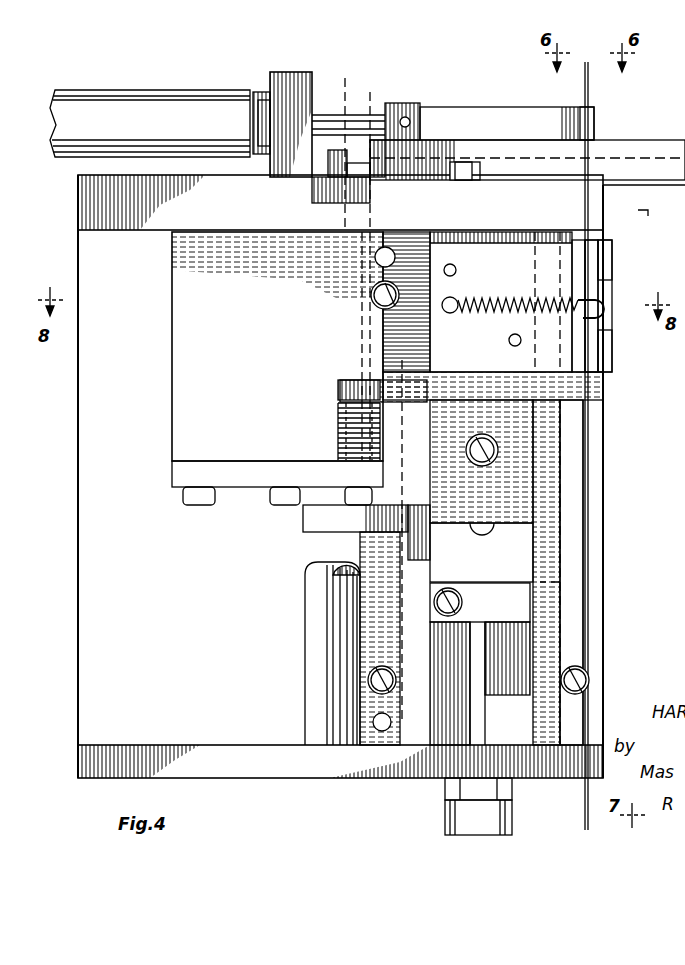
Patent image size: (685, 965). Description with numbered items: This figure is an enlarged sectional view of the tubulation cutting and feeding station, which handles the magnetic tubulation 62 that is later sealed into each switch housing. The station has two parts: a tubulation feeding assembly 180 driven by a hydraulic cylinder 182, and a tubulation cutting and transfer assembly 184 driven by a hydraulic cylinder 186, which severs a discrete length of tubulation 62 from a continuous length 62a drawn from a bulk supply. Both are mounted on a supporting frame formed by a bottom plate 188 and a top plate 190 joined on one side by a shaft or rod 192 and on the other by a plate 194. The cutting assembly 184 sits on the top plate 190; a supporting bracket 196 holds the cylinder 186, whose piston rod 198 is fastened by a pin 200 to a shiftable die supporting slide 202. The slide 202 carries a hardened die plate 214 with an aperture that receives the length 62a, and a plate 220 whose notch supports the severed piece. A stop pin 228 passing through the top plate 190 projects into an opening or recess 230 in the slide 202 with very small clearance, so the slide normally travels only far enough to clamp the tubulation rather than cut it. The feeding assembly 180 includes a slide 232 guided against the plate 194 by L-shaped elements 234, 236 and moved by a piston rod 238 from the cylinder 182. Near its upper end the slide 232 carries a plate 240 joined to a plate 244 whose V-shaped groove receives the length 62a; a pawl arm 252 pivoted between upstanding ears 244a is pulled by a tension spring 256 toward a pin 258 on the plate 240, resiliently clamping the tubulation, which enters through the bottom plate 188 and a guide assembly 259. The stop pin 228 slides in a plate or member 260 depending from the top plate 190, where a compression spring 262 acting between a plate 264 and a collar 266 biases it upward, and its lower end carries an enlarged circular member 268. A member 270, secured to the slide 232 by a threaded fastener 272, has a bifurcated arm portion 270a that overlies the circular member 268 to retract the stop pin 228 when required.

The tubulation 62 is at (589, 88).
The continuous length of tubulation 62a is at (586, 580).
The tubulation feeding assembly 180 is at (655, 492).
The hydraulic cylinder 182 is at (512, 820).
The tubulation cutting and transfer assembly 184 is at (488, 78).
The hydraulic cylinder 186 is at (142, 86).
The bottom plate 188 is at (90, 762).
The top plate 190 is at (92, 205).
The shaft or rod 192 is at (316, 628).
The plate 194 is at (79, 487).
The supporting bracket 196 is at (283, 74).
The piston rod 198 is at (320, 112).
The pin 200 is at (405, 116).
The die supporting slide 202 is at (495, 112).
The plate 214 is at (596, 176).
The plate 220 is at (594, 122).
The stop pin 228 is at (372, 150).
The opening or recess 230 is at (342, 142).
The slide 232 is at (517, 550).
The L-shaped element 234 is at (571, 608).
The L-shaped element 236 is at (382, 735).
The piston rod 238 is at (468, 730).
The plate 240 is at (501, 302).
The plate 244 is at (578, 368).
The upstanding ears 244a is at (608, 270).
The pawl arm 252 is at (590, 255).
The tension spring 256 is at (523, 294).
The pin 258 is at (450, 295).
The guide assembly 259 is at (588, 702).
The plate or member 260 is at (172, 362).
The compression spring 262 is at (338, 436).
The plate 264 is at (178, 468).
The collar 266 is at (338, 388).
The enlarged circular member 268 is at (306, 528).
The member 270 is at (525, 478).
The bifurcated arm portion 270a is at (352, 378).
The threaded fastener 272 is at (482, 462).